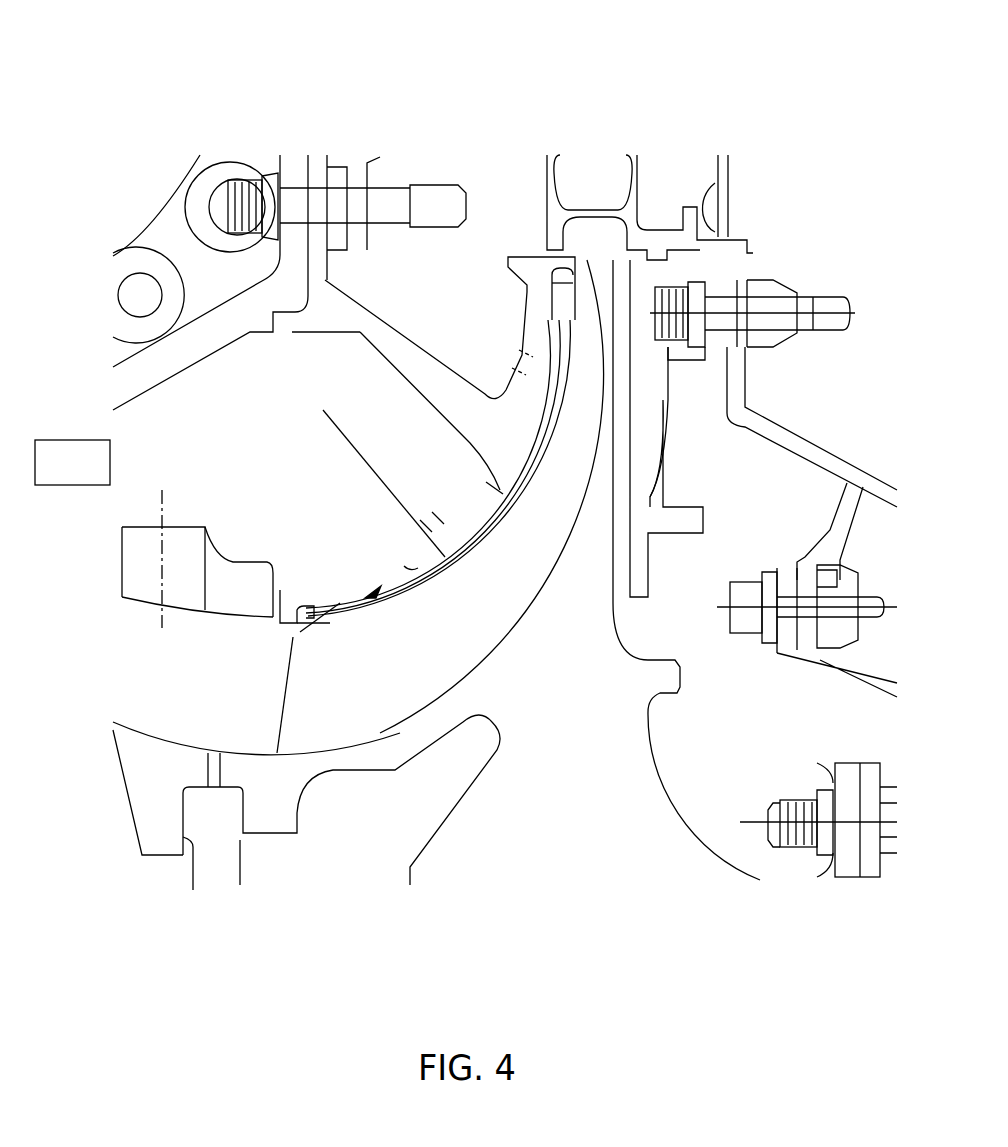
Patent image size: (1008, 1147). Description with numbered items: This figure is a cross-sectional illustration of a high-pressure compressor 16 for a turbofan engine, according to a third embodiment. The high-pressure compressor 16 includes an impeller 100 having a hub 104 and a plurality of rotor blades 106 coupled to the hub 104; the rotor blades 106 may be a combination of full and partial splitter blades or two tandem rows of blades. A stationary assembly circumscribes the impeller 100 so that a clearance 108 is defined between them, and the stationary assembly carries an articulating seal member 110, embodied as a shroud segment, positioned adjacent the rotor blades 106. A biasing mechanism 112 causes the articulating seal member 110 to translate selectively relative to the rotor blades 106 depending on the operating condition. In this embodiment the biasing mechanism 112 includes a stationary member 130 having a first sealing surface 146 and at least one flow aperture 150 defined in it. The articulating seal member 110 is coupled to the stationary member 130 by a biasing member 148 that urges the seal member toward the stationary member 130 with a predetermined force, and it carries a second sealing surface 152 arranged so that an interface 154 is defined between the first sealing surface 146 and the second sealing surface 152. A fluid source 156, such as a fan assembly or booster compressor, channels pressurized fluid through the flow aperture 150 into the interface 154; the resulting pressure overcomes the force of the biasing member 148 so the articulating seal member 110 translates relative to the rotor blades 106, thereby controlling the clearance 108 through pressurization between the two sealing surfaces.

The high-pressure compressor 16 is at (423, 132).
The impeller 100 is at (651, 895).
The hub 104 is at (588, 763).
The rotor blades 106 is at (500, 613).
The clearance 108 is at (280, 630).
The articulating seal member 110 is at (560, 303).
The biasing mechanism 112 is at (347, 373).
The stationary member 130 is at (393, 347).
The first sealing surface 146 is at (410, 567).
The biasing member 148 is at (532, 287).
The flow aperture 150 is at (517, 357).
The second sealing surface 152 is at (500, 490).
The interface 154 is at (317, 620).
The fluid source 156 is at (523, 357).